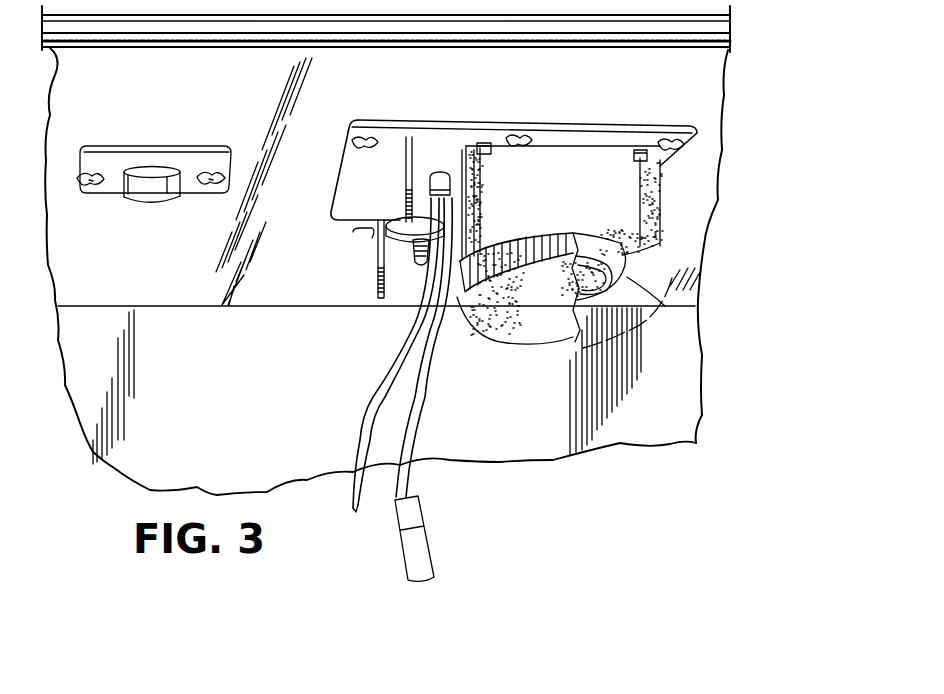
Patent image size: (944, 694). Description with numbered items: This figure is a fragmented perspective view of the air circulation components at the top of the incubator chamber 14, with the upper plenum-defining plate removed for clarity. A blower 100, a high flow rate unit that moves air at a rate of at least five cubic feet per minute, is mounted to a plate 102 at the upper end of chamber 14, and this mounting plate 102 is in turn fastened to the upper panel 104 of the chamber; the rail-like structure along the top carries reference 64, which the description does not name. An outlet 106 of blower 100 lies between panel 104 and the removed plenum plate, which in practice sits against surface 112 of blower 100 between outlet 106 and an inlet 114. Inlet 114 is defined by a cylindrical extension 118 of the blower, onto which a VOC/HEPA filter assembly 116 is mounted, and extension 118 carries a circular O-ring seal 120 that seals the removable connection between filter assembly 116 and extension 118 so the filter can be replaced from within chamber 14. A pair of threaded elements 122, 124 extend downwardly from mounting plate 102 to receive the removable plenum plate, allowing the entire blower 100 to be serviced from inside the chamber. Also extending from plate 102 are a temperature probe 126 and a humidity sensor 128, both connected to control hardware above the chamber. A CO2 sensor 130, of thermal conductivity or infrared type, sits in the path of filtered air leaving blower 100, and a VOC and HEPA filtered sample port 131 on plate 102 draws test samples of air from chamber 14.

The chamber 14 is at (376, 385).
The top rail 64 is at (384, 50).
The blower 100 is at (592, 150).
The plate 102 is at (448, 124).
The upper panel 104 is at (386, 271).
The outlet 106 is at (480, 188).
The surface 112 is at (530, 244).
The inlet 114 is at (592, 348).
The VOC/HEPA filter assembly 116 is at (572, 355).
The cylindrical extension 118 is at (621, 250).
The circular O-ring seal 120 is at (610, 279).
The threaded element 122 is at (404, 170).
The threaded element 124 is at (368, 252).
The temperature probe 126 is at (366, 446).
The humidity sensor 128 is at (418, 456).
The CO2 sensor 130 is at (142, 204).
The VOC and HEPA filtered sample port 131 is at (410, 268).